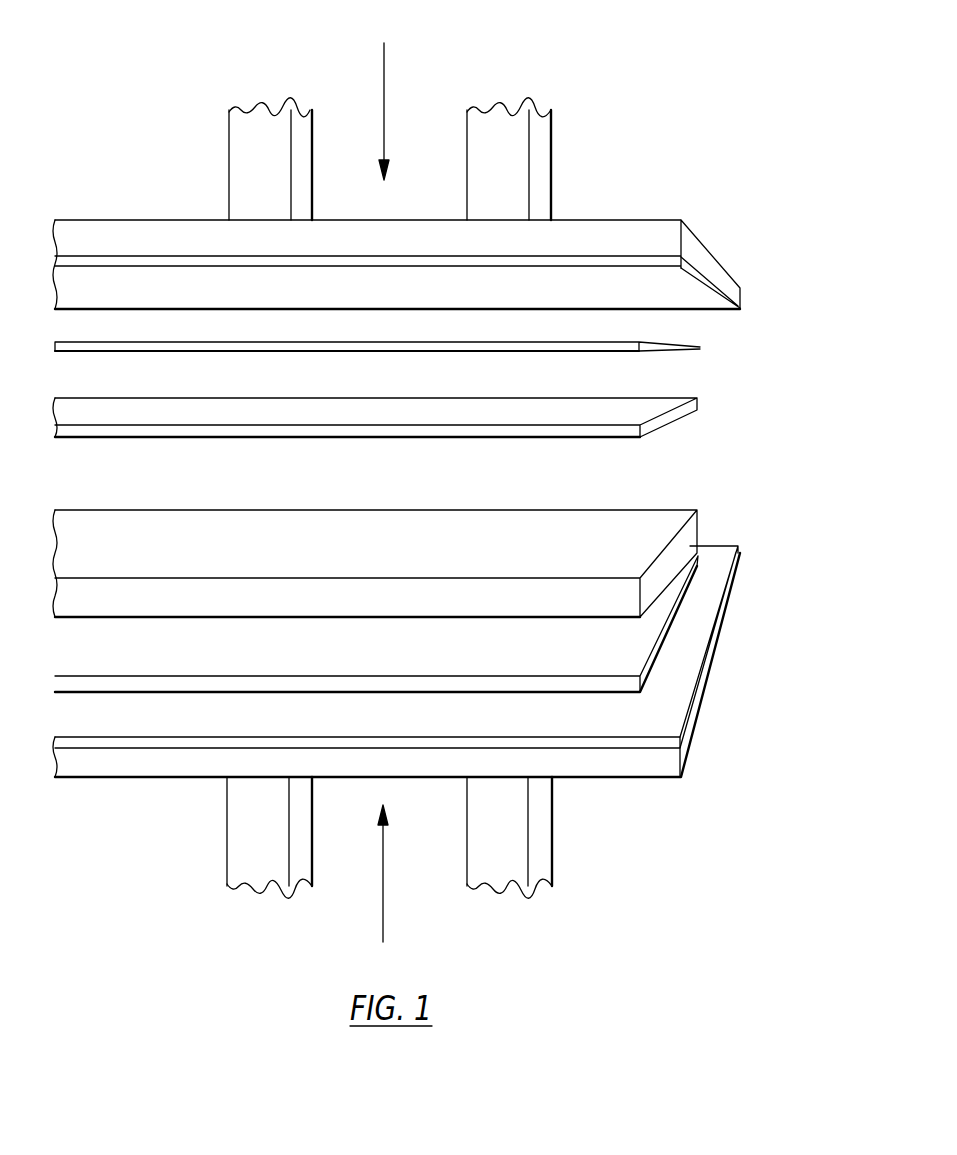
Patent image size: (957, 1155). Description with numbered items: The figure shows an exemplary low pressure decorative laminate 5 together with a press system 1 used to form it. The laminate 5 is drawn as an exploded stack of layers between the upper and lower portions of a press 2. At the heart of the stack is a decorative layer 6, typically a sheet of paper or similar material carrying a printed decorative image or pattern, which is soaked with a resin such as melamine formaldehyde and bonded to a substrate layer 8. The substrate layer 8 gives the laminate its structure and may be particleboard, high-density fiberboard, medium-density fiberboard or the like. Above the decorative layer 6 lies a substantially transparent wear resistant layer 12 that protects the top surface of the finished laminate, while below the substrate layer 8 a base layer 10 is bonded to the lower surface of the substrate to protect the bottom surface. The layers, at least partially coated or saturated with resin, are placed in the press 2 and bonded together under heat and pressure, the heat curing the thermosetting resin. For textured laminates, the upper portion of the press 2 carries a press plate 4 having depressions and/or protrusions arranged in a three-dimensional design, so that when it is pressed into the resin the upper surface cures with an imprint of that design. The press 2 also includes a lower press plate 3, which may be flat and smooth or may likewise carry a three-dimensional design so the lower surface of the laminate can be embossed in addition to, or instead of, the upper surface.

The press system 1 is at (724, 145).
The press 2 is at (609, 230).
The lower press plate 3 is at (693, 633).
The press plate 4 is at (705, 302).
The low pressure decorative laminate 5 is at (478, 500).
The decorative layer 6 is at (665, 403).
The substrate layer 8 is at (667, 520).
The base layer 10 is at (423, 591).
The wear resistant layer 12 is at (700, 347).